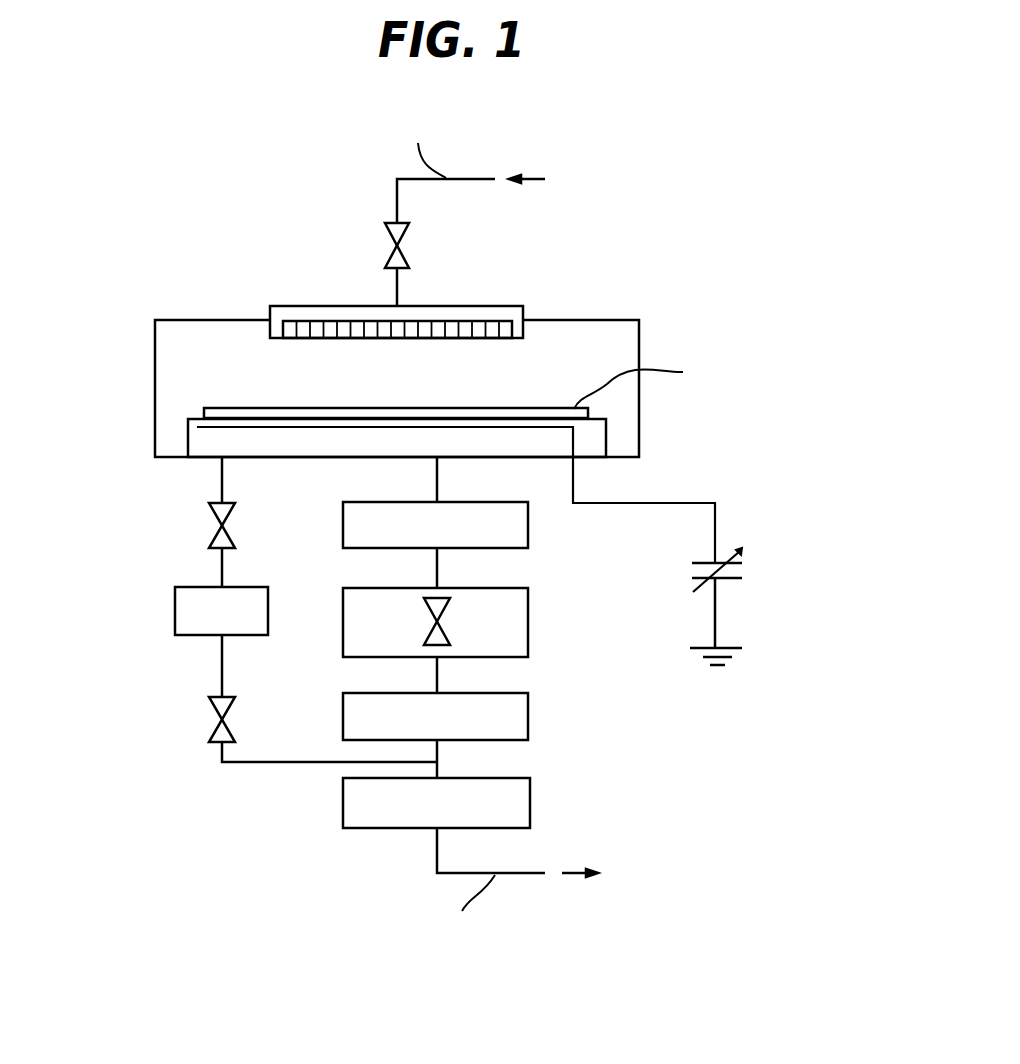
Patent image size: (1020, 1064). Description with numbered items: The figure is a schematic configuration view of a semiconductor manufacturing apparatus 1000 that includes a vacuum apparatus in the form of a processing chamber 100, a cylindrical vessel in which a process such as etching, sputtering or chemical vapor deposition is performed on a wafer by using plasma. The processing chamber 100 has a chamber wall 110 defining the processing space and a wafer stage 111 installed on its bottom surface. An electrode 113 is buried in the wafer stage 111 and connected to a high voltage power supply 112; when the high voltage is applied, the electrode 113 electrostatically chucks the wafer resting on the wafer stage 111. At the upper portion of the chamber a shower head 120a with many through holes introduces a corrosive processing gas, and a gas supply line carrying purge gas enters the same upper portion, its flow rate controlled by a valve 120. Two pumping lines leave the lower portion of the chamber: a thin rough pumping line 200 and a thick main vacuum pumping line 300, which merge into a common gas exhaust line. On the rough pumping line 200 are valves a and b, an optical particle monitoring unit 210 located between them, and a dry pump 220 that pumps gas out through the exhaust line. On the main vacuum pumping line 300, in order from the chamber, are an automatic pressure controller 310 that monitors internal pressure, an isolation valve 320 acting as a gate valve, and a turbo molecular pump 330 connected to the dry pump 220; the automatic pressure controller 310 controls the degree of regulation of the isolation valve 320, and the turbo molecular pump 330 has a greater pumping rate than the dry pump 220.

The semiconductor manufacturing apparatus 1000 is at (680, 275).
The processing chamber 100 is at (551, 318).
The chamber wall 110 is at (152, 375).
The wafer stage 111 is at (507, 437).
The high voltage power supply 112 is at (700, 572).
The electrode 113 is at (598, 433).
The valve 120 is at (383, 253).
The shower head 120a is at (283, 304).
The rough pumping line 200 is at (152, 655).
The optical particle monitoring unit 210 is at (172, 614).
The dry pump 220 is at (343, 800).
The main vacuum pumping line 300 is at (560, 691).
The automatic pressure controller 310 is at (343, 520).
The isolation valve 320 is at (530, 620).
The turbo molecular pump 330 is at (343, 716).